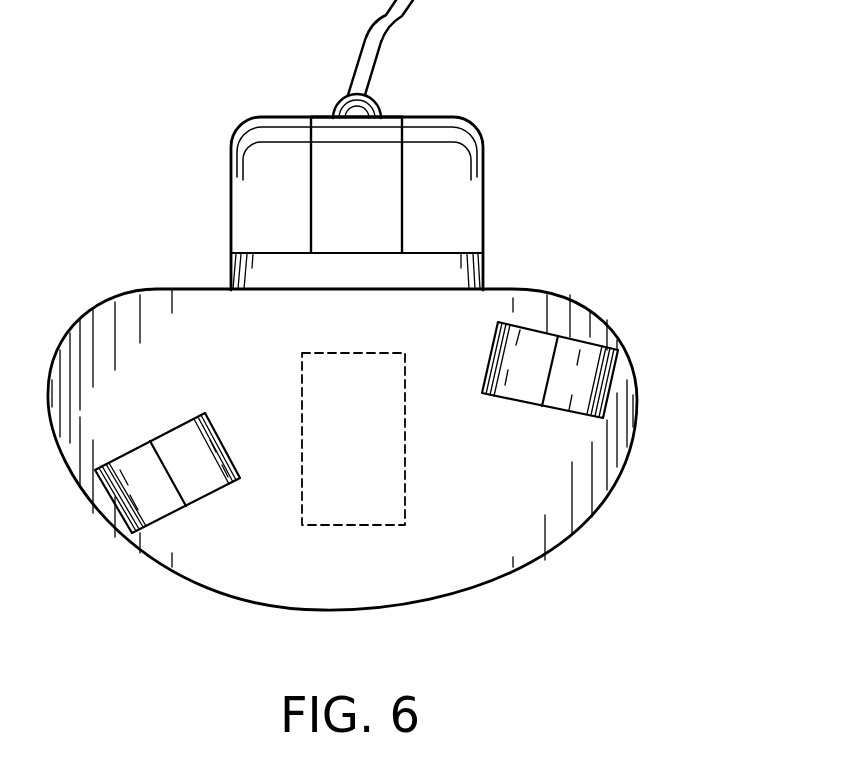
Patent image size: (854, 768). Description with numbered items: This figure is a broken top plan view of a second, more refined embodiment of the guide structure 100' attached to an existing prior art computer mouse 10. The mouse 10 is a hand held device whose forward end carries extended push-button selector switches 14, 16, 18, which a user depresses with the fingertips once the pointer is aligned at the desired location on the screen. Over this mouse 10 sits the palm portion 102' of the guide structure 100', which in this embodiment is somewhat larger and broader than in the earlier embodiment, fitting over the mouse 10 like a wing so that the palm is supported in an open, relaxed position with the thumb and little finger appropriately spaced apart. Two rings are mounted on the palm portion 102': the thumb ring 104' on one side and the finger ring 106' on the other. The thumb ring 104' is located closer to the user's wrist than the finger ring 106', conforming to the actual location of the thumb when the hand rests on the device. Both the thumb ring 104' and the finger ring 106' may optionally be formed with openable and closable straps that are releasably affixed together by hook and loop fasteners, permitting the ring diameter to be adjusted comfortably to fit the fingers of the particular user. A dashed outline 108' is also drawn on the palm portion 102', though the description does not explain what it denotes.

The housing 10 is at (483, 241).
The first indicator compartment 14 is at (293, 212).
The second indicator compartment 16 is at (381, 212).
The third indicator compartment 18 is at (464, 212).
The assembly 100' is at (405, 331).
The base body 102' is at (405, 476).
The first sensor 104' is at (167, 529).
The second sensor 106' is at (622, 370).
The circuit region 108' is at (355, 508).